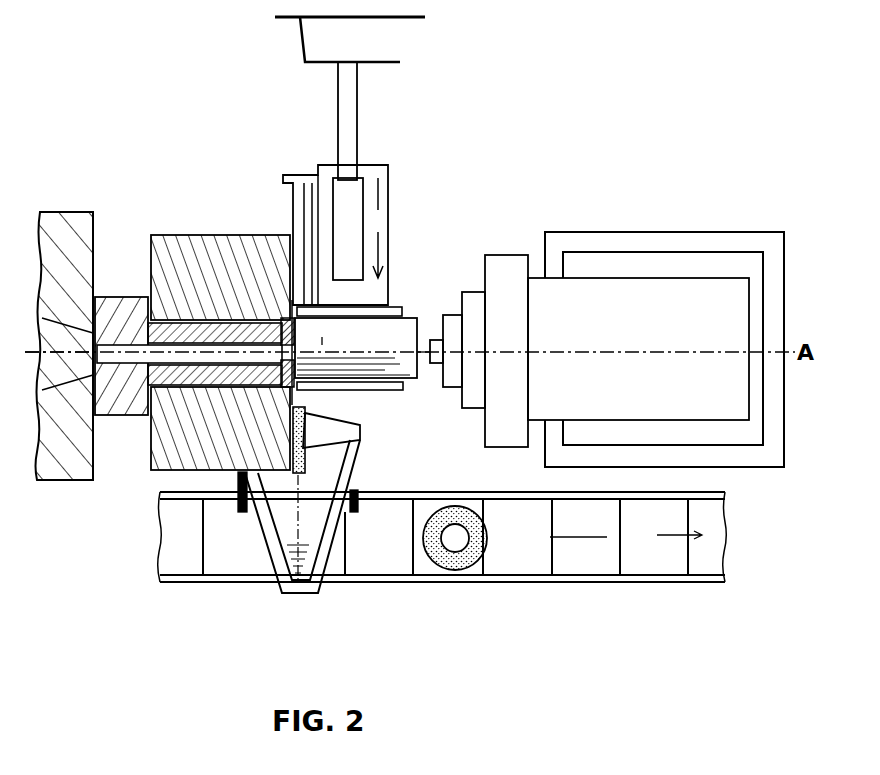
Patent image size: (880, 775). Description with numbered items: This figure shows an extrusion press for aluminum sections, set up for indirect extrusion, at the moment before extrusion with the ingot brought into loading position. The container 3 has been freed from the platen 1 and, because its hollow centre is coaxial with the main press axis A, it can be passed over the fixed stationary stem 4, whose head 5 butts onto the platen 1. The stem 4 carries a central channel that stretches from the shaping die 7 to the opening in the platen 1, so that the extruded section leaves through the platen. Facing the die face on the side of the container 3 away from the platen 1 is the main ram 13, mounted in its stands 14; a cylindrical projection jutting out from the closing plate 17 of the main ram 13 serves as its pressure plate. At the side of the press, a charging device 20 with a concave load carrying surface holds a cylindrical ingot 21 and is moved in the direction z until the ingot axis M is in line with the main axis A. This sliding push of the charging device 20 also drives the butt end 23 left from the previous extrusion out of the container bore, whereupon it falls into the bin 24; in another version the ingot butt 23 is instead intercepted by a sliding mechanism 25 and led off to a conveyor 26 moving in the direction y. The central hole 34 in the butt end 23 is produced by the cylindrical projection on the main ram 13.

The platen 1 is at (80, 228).
The container 3 is at (226, 256).
The stem 4 is at (210, 330).
The head 5 is at (134, 400).
The shaping die 7 is at (312, 386).
The main ram 13 is at (600, 326).
The stands 14 is at (687, 243).
The closing plate 17 is at (452, 330).
The charging device 20 is at (380, 295).
The ingot 21 is at (405, 347).
The butt end 23 is at (453, 517).
The bin 24 is at (327, 478).
The sliding mechanism 25 is at (247, 512).
The conveyor 26 is at (540, 541).
The central hole 34 is at (452, 540).